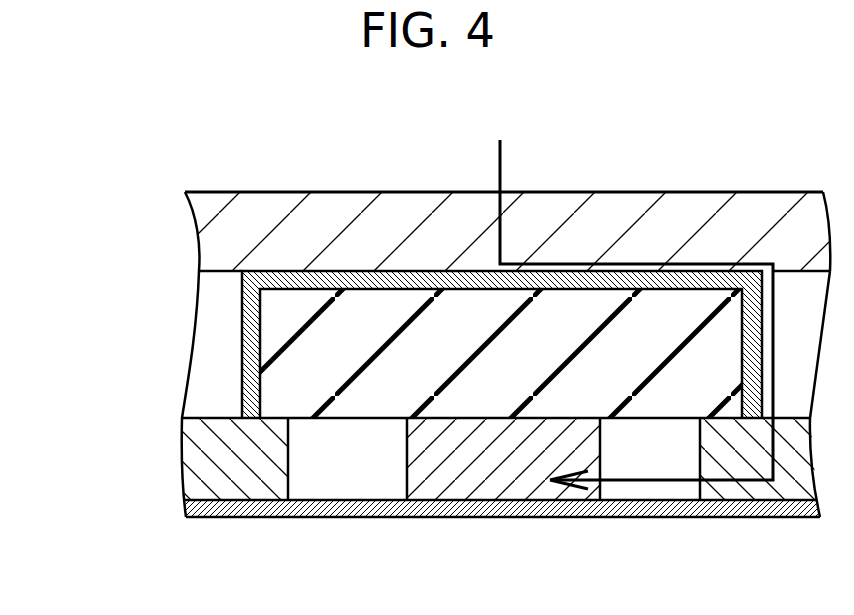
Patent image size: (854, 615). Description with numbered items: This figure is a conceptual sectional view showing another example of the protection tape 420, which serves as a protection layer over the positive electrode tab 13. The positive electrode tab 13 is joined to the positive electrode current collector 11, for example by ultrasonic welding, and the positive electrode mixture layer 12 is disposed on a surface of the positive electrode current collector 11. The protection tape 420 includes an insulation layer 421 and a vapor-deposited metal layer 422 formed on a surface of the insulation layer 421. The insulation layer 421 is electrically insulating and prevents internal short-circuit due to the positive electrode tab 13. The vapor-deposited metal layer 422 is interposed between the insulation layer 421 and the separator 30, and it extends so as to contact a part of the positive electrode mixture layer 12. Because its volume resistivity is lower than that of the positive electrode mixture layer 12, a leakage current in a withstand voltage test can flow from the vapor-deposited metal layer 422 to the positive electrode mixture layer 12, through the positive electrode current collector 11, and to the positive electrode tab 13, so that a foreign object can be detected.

The positive electrode current collector 11 is at (640, 507).
The positive electrode mixture layer 12 is at (228, 470).
The positive electrode tab 13 is at (457, 460).
The separator 30 is at (332, 217).
The protection tape 420 is at (387, 344).
The insulation layer 421 is at (322, 383).
The vapor-deposited metal layer 422 is at (242, 328).